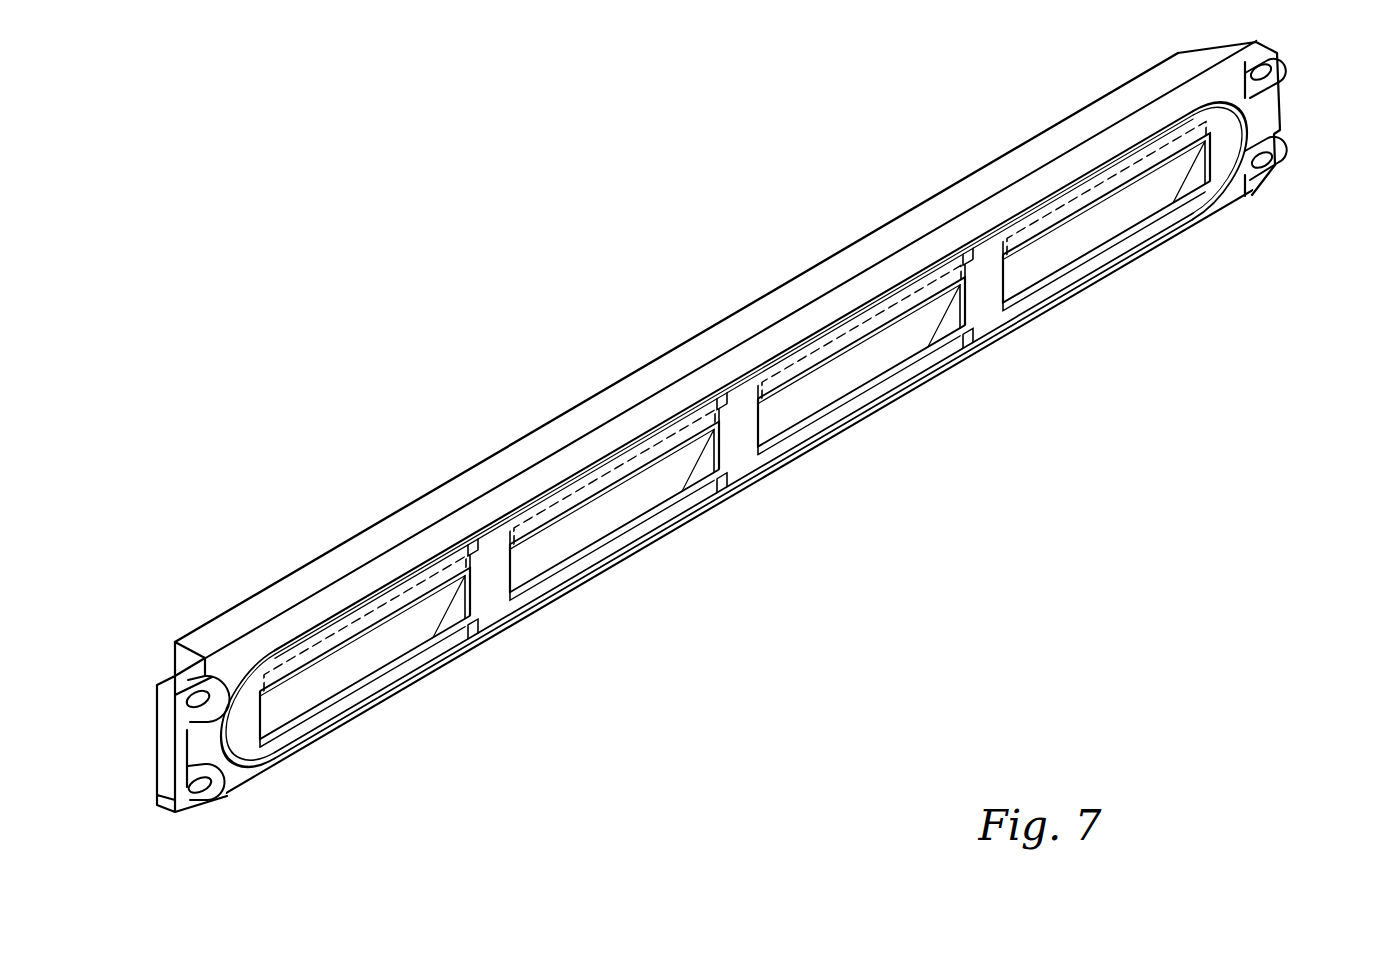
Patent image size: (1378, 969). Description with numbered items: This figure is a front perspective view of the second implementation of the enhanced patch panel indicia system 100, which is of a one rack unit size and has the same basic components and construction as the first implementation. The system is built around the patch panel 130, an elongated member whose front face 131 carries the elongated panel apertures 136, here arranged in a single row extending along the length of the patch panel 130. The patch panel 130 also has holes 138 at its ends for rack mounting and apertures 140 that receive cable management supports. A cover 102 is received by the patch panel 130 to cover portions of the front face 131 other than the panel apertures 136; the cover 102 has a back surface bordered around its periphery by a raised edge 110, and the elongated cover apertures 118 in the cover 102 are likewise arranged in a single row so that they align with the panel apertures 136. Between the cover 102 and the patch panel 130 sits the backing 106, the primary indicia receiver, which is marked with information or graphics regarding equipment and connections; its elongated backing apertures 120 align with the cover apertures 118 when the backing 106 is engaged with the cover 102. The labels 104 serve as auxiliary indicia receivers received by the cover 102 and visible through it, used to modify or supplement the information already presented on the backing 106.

The enhanced patch panel indicia system 100 is at (1092, 642).
The cover 102 is at (752, 468).
The labels 104 is at (1100, 180).
The backing 106 is at (737, 393).
The raised edge 110 is at (935, 378).
The elongated cover apertures 118 is at (1093, 237).
The elongated backing apertures 120 is at (1165, 185).
The patch panel 130 is at (622, 348).
The front face 131 is at (808, 510).
The elongated panel apertures 136 is at (1130, 215).
The holes 138 is at (1262, 76).
The apertures 140 is at (985, 236).